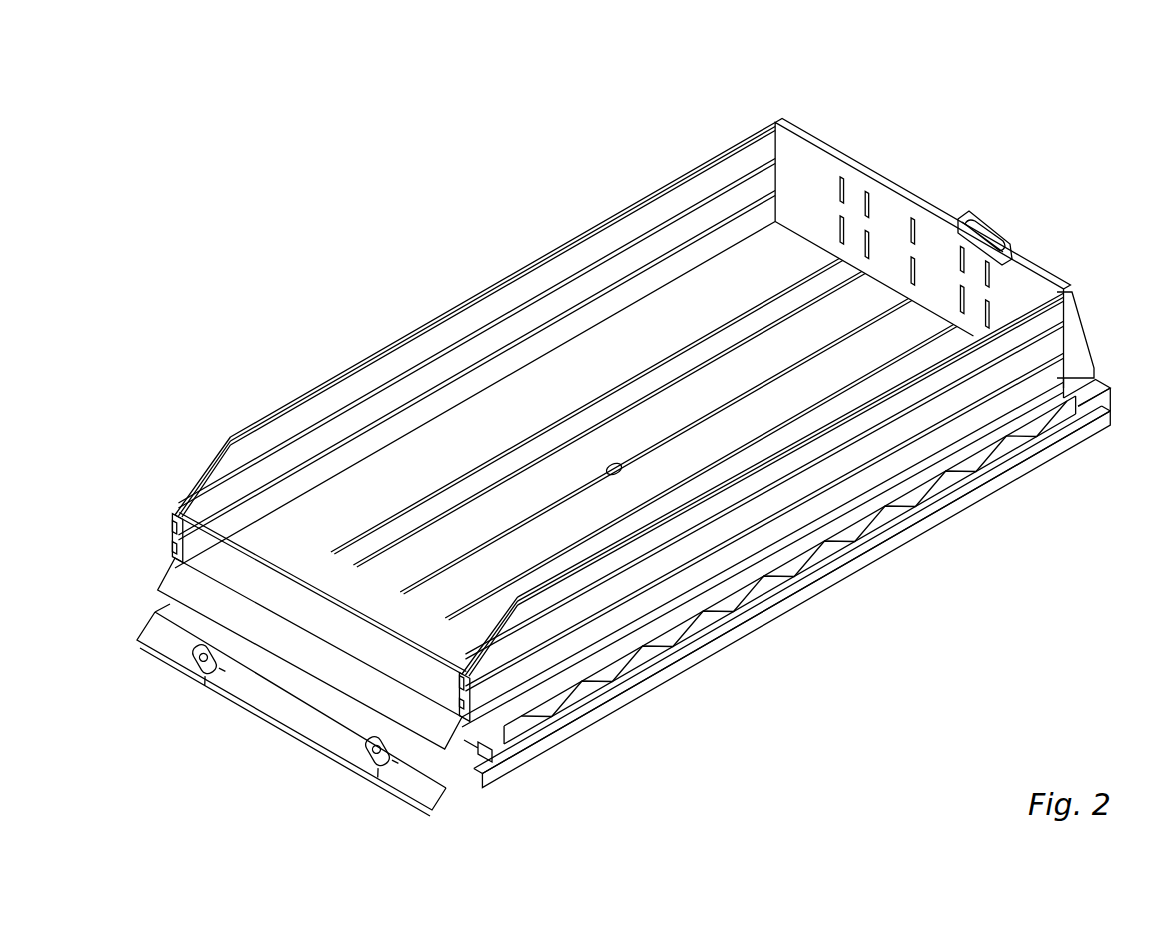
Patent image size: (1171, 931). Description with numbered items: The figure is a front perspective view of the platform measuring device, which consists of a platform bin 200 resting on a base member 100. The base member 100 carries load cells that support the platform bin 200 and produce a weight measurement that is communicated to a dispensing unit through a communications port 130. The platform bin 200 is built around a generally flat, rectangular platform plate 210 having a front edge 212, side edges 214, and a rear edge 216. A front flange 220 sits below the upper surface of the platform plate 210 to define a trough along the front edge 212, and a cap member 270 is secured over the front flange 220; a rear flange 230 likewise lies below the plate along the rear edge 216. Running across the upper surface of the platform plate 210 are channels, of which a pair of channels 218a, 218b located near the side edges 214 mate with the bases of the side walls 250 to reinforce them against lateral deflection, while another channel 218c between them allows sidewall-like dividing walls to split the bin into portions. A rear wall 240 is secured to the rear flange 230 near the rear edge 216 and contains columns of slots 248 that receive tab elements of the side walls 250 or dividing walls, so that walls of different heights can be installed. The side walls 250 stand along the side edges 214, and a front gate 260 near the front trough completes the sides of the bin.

The base member 100 is at (840, 580).
The communications port 130 is at (995, 230).
The platform bin 200 is at (640, 224).
The platform plate 210 is at (440, 437).
The front edge 212 is at (507, 740).
The side edges 214 is at (643, 637).
The rear edge 216 is at (1063, 392).
The channel 218a is at (822, 262).
The channel 218b is at (852, 267).
The channel 218c is at (897, 300).
The front flange 220 is at (477, 752).
The rear flange 230 is at (1087, 407).
The rear wall 240 is at (1040, 273).
The slots 248 is at (958, 260).
The side walls 250 is at (510, 325).
The front gate 260 is at (192, 547).
The cap member 270 is at (353, 687).